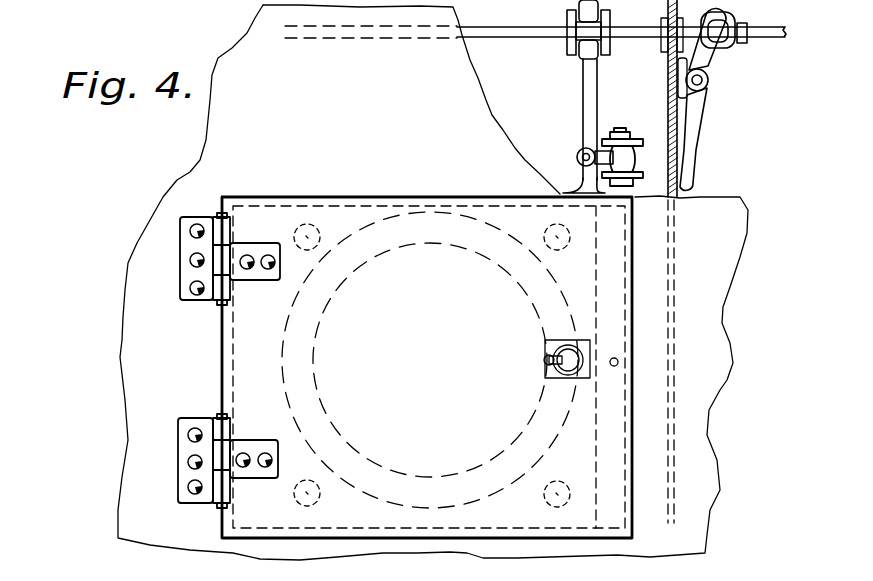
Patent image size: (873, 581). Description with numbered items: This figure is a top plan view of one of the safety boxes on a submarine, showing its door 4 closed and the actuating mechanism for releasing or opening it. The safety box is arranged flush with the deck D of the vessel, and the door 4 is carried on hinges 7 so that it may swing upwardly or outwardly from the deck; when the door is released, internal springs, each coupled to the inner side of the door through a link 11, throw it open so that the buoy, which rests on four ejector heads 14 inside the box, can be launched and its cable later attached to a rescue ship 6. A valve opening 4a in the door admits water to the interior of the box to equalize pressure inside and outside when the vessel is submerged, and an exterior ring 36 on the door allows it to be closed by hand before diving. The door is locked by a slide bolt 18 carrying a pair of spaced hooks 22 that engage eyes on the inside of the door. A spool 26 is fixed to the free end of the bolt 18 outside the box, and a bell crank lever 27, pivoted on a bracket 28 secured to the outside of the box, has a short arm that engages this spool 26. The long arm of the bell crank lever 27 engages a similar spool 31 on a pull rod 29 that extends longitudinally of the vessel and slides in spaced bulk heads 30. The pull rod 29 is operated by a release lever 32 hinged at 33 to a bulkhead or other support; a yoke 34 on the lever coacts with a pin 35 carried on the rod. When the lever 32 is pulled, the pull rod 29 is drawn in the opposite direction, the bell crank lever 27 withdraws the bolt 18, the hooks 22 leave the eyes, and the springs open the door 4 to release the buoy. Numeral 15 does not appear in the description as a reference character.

The deck D is at (140, 312).
The door 4 is at (323, 510).
The valve opening 4a is at (618, 361).
The rescue ship 6 is at (597, 569).
The hinges 7 is at (220, 213).
The link 11 is at (246, 573).
The ejector head 14 is at (312, 215).
The door member 15 is at (459, 569).
The slide bolt 18 is at (617, 132).
The hooks 22 is at (534, 572).
The spool 26 is at (642, 180).
The bell crank lever 27 is at (583, 97).
The bracket 28 is at (565, 195).
The pull rod 29 is at (503, 32).
The bulk heads 30 is at (669, 50).
The spool 31 is at (567, 40).
The release lever 32 is at (697, 163).
The hinge 33 is at (703, 83).
The yoke 34 is at (720, 53).
The pin 35 is at (727, 37).
The ring 36 is at (545, 364).